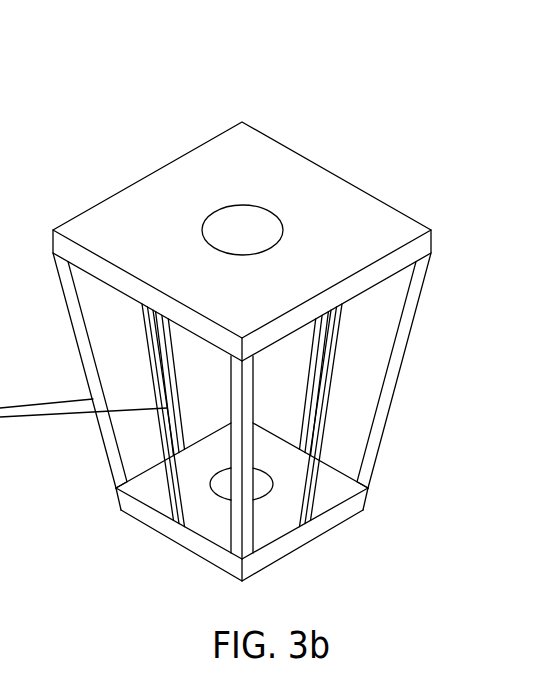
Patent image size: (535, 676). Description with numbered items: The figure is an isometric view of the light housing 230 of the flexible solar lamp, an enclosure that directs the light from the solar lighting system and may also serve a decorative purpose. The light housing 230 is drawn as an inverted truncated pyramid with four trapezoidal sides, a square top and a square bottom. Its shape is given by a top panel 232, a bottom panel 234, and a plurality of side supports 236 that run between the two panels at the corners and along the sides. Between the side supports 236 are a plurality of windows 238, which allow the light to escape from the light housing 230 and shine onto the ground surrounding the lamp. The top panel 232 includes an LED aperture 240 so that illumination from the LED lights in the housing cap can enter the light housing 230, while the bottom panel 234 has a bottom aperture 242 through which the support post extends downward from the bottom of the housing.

The light housing 230 is at (53, 82).
The top panel 232 is at (342, 213).
The bottom panel 234 is at (323, 493).
The side supports 236 is at (197, 358).
The windows 238 is at (357, 372).
The LED aperture 240 is at (272, 210).
The bottom aperture 242 is at (222, 487).